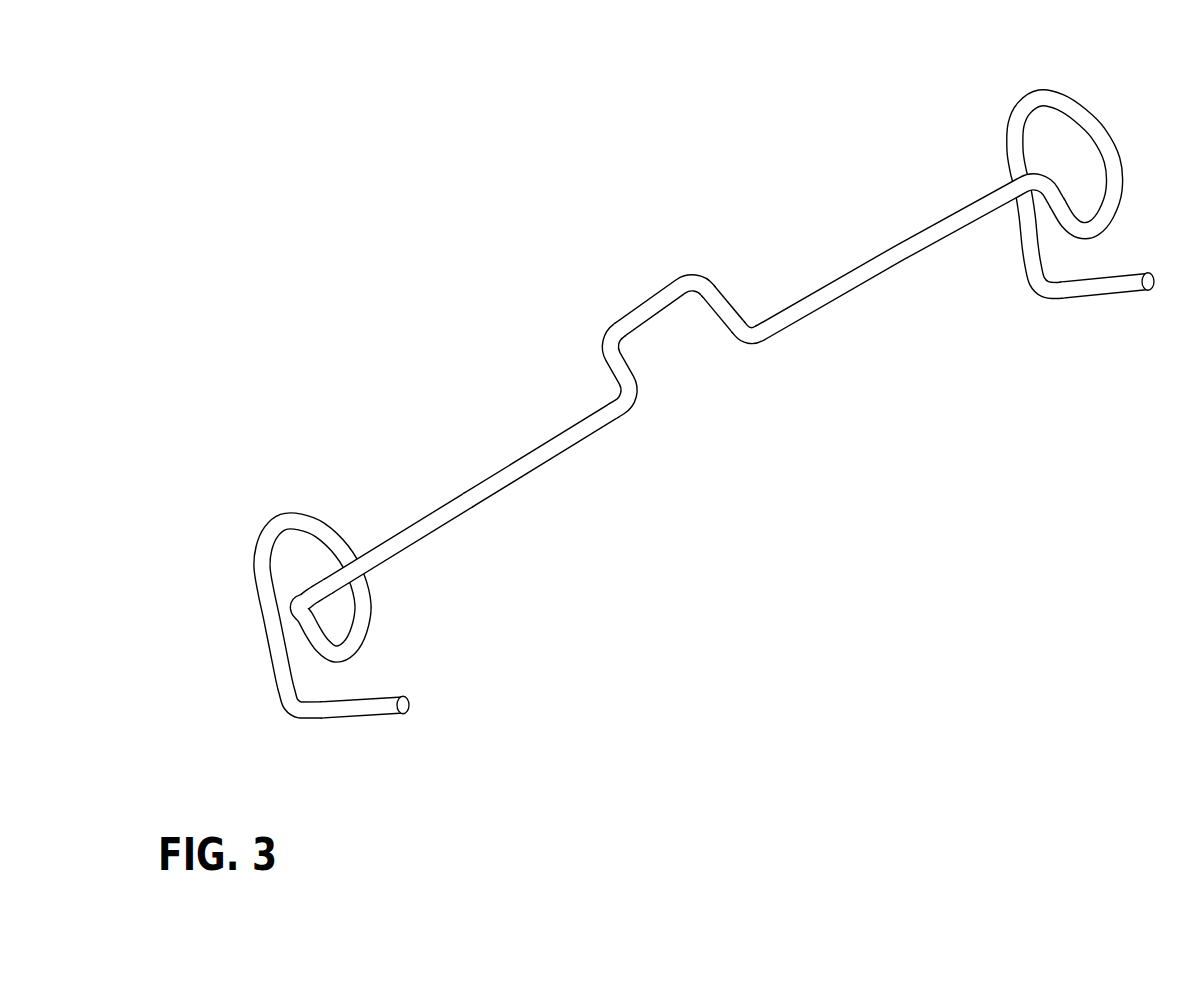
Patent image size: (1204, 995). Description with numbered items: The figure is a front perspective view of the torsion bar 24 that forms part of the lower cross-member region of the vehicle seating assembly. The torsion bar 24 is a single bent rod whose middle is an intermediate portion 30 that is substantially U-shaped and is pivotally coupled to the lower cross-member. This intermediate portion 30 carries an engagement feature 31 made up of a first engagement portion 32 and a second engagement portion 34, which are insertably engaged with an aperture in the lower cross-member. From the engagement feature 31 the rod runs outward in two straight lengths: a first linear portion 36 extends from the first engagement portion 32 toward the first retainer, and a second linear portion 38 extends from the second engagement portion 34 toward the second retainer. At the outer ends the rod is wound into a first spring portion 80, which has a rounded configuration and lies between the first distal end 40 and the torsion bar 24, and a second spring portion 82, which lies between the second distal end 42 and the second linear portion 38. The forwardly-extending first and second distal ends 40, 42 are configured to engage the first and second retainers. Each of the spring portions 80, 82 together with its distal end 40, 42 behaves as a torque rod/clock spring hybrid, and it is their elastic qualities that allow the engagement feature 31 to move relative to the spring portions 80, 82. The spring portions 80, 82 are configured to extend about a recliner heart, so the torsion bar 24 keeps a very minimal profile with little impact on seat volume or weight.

The torsion bar 24 is at (408, 537).
The intermediate portion 30 is at (738, 338).
The engagement feature 31 is at (650, 310).
The first engagement portion 32 is at (623, 365).
The second engagement portion 34 is at (723, 303).
The first linear portion 36 is at (515, 478).
The second linear portion 38 is at (900, 258).
The first distal end 40 is at (373, 702).
The second distal end 42 is at (1115, 287).
The first spring portion 80 is at (293, 523).
The second spring portion 82 is at (1047, 100).